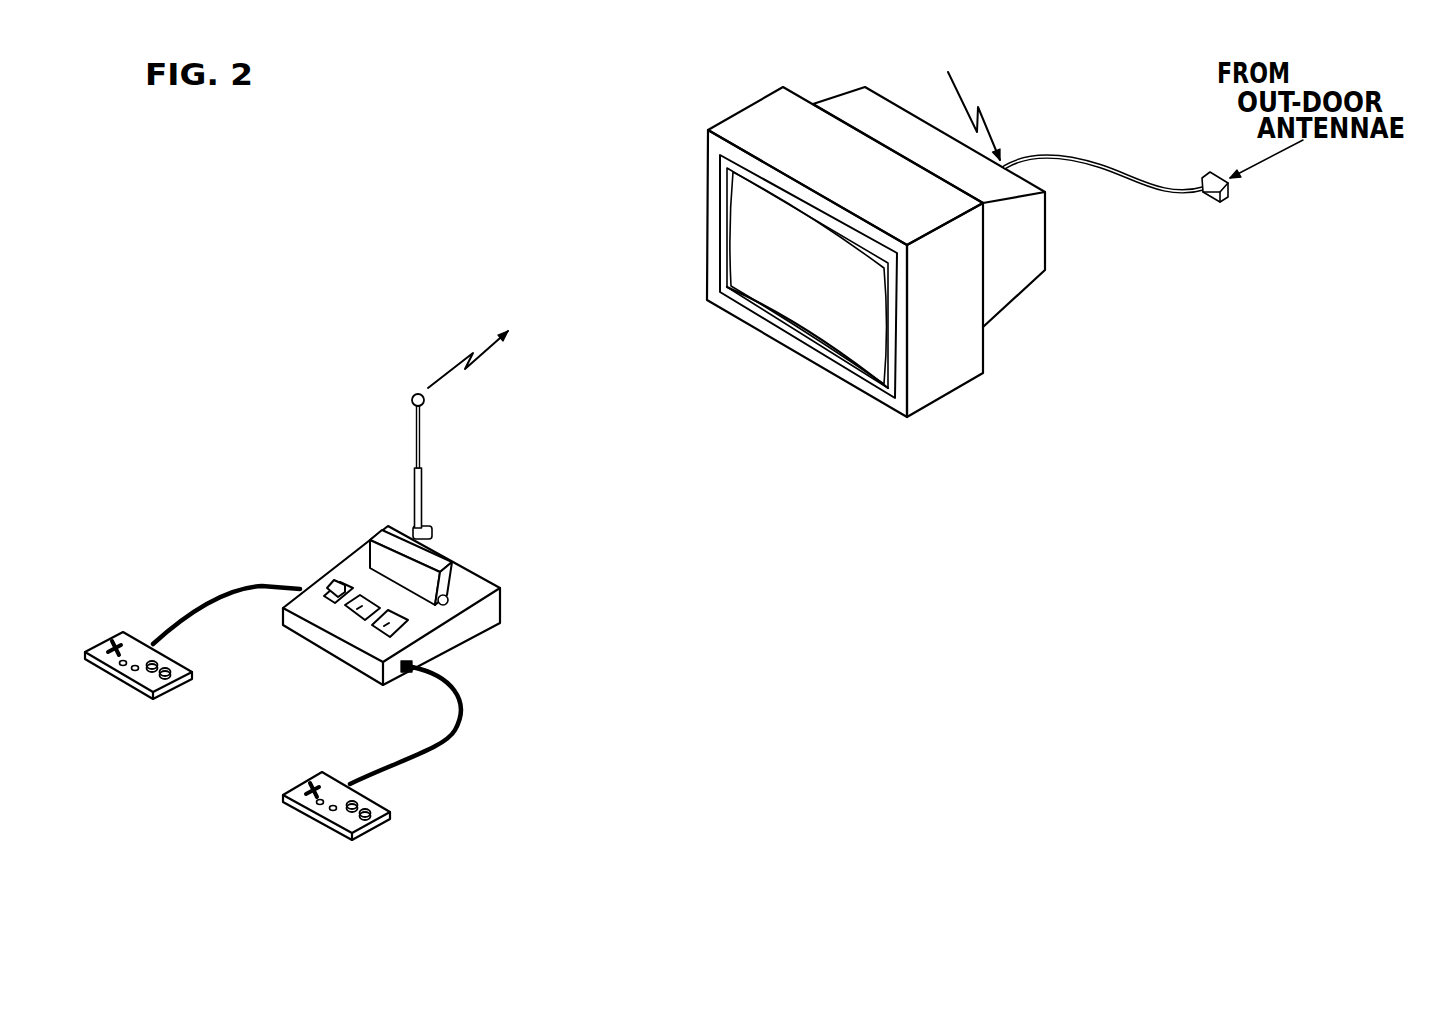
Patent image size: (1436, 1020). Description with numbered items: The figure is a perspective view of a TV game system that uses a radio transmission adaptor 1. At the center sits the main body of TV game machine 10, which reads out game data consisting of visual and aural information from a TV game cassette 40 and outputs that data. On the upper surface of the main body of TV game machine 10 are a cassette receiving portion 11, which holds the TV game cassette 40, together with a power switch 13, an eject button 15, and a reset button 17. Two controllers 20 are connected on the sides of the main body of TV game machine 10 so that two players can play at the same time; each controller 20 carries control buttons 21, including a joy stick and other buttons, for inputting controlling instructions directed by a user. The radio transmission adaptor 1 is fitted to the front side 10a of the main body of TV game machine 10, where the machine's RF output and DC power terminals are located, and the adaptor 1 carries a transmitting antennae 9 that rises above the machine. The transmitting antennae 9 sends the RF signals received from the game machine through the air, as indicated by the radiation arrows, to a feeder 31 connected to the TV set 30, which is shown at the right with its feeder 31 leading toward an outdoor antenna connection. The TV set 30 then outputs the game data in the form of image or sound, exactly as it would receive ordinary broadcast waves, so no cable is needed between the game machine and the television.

The radio transmission adaptor 1 is at (437, 522).
The transmitting antennae 9 is at (417, 483).
The main body of TV game machine 10 is at (414, 542).
The front side 10a is at (462, 547).
The cassette receiving portion 11 is at (449, 598).
The power switch 13 is at (324, 592).
The eject button 15 is at (347, 613).
The reset button 17 is at (374, 627).
The controller 20 is at (294, 700).
The control buttons 21 is at (147, 676).
The TV set 30 is at (938, 382).
The feeder 31 is at (1068, 160).
The TV game cassette 40 is at (443, 582).